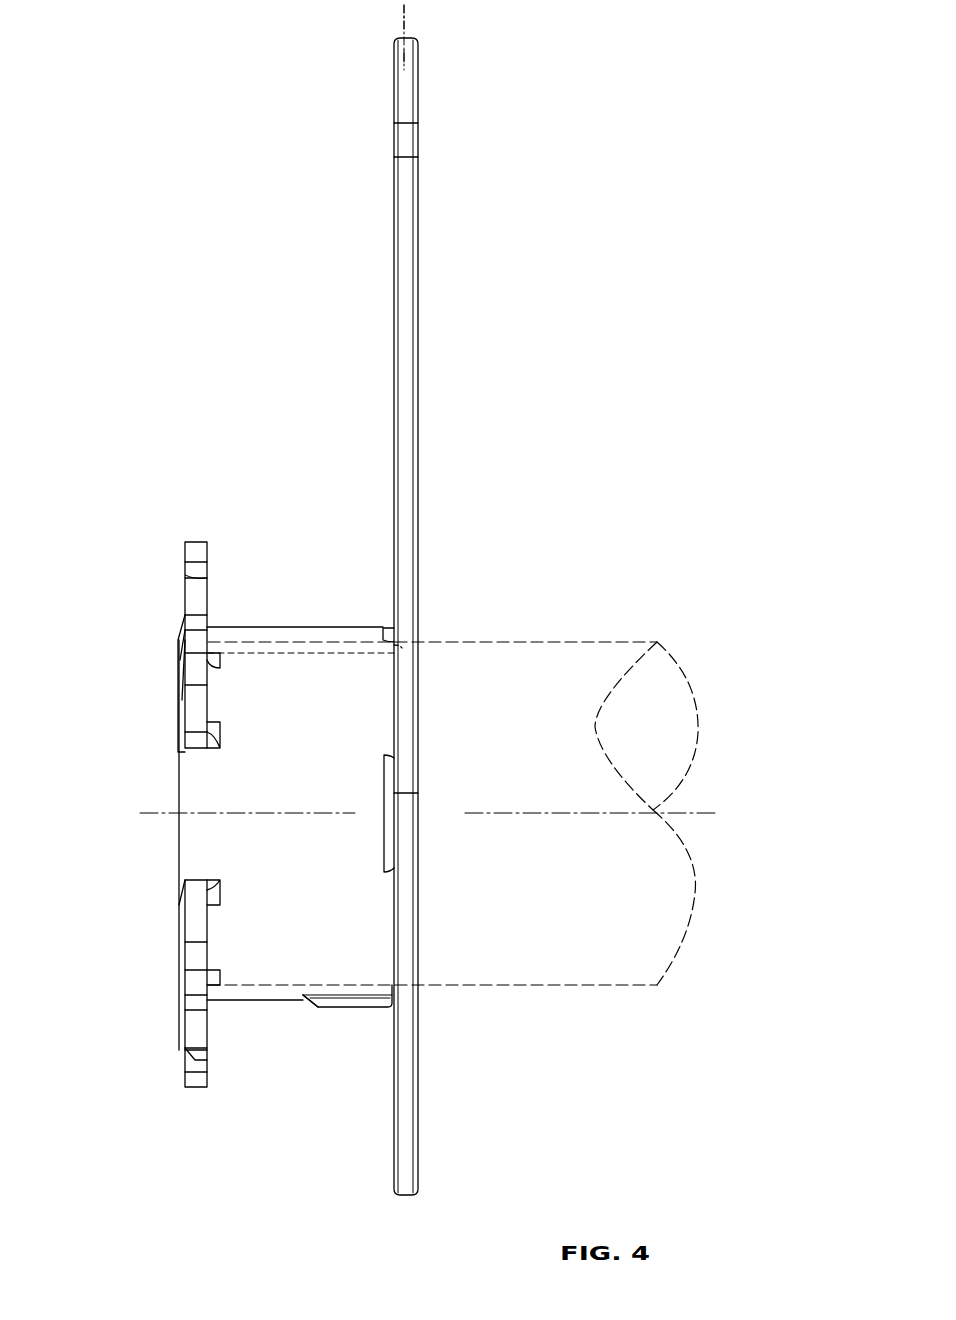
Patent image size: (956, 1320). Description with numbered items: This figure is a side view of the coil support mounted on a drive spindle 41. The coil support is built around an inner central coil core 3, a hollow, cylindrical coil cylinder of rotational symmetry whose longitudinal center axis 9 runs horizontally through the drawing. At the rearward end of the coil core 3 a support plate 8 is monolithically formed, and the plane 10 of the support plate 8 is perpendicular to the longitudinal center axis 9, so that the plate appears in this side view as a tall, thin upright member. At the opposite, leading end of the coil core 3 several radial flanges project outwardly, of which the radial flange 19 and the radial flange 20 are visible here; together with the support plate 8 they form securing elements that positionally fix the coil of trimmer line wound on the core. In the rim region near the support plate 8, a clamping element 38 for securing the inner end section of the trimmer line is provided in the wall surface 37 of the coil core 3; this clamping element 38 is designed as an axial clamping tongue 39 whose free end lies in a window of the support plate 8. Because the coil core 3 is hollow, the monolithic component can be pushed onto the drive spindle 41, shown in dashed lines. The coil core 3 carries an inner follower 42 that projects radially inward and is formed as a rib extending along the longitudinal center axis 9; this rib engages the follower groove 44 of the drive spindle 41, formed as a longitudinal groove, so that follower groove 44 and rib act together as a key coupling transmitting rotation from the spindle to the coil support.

The coil core 3 is at (260, 779).
The support plate 8 is at (408, 430).
The longitudinal center axis 9 is at (203, 813).
The plane 10 is at (403, 7).
The radial flange 19 is at (182, 628).
The radial flange 20 is at (177, 990).
The wall surface 37 is at (310, 742).
The clamping element 38 is at (323, 1020).
The axial clamping tongue 39 is at (352, 1003).
The drive spindle 41 is at (556, 722).
The inner follower 42 is at (327, 647).
The follower groove 44 is at (427, 643).